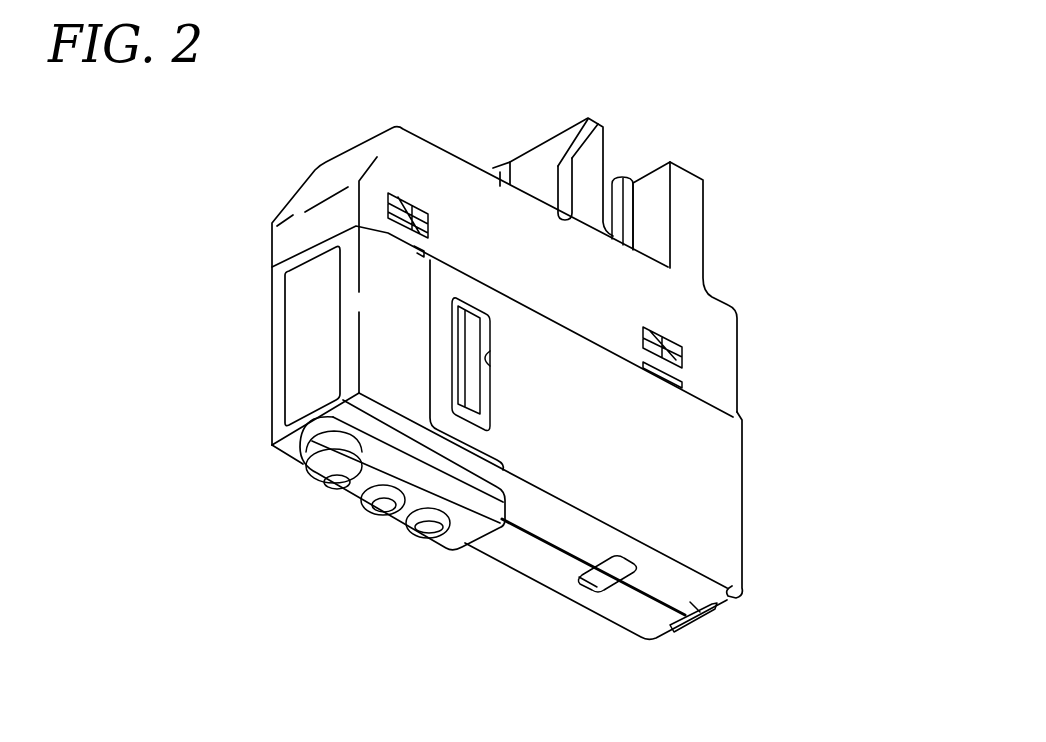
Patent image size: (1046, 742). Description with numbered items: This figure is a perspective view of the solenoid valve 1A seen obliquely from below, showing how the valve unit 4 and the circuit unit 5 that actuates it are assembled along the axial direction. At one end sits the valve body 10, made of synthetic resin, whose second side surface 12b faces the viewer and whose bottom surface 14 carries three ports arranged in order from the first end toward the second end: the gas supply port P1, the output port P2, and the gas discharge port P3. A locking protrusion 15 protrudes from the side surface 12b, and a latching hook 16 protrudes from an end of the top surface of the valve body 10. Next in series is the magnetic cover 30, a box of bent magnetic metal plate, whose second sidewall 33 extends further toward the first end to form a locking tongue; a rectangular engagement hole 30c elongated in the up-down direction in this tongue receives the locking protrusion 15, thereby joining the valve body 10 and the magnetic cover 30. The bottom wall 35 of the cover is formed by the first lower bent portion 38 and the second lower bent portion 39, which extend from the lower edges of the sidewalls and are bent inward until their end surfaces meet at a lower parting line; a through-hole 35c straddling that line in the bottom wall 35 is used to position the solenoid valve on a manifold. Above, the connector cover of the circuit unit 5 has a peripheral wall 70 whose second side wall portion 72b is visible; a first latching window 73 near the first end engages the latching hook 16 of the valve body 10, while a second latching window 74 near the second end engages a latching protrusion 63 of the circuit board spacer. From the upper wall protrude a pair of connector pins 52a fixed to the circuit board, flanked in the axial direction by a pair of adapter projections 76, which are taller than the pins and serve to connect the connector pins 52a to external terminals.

The solenoid valve 1A is at (880, 89).
The valve unit 4 is at (767, 548).
The circuit unit 5 is at (762, 270).
The valve body 10 is at (235, 327).
The second side surface 12b is at (387, 368).
The bottom surface 14 is at (273, 481).
The locking protrusion 15 is at (473, 392).
The latching hook 16 is at (388, 208).
The magnetic cover 30 is at (726, 497).
The engagement hole 30c is at (492, 362).
The second sidewall 33 is at (652, 472).
The bottom wall 35 is at (520, 566).
The through-hole 35c is at (592, 580).
The first lower bent portion 38 is at (630, 600).
The second lower bent portion 39 is at (704, 612).
The connector pin 52a is at (620, 178).
The latching protrusion 63 is at (683, 369).
The peripheral wall 70 is at (395, 137).
The second side wall portion 72b is at (567, 277).
The first latching window 73 is at (428, 229).
The second latching window 74 is at (688, 342).
The adapter projection 76 is at (538, 168).
The gas supply port P1 is at (337, 487).
The output port P2 is at (383, 510).
The gas discharge port P3 is at (429, 533).